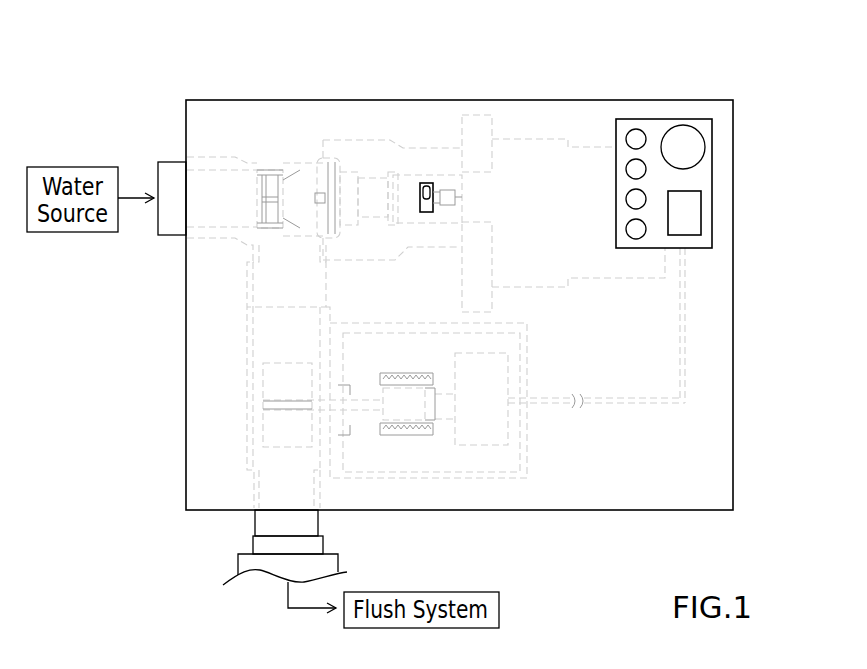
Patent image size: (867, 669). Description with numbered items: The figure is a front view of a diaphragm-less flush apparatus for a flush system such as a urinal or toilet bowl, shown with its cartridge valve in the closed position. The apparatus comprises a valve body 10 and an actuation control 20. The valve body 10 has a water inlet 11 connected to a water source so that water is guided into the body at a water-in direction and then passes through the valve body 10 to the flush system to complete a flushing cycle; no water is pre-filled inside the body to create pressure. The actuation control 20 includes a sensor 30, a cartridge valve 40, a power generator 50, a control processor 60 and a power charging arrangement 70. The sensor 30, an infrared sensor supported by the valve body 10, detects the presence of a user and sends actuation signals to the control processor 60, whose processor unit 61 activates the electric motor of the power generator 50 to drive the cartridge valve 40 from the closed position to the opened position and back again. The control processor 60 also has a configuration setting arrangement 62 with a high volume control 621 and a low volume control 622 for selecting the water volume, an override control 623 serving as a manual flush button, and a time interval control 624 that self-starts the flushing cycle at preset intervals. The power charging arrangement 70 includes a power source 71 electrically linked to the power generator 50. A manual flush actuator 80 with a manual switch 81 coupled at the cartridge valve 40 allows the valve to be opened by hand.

The valve body 10 is at (229, 165).
The water inlet 11 is at (170, 170).
The actuation control 20 is at (801, 122).
The sensor 30 is at (690, 153).
The cartridge valve 40 is at (302, 182).
The power generator 50 is at (572, 247).
The control processor 60 is at (729, 203).
The processor unit 61 is at (690, 216).
The configuration setting arrangement 62 is at (703, 203).
The high volume control 621 is at (634, 129).
The low volume control 622 is at (640, 167).
The override control 623 is at (640, 206).
The time interval control 624 is at (637, 237).
The power charging arrangement 70 is at (408, 453).
The power source 71 is at (469, 414).
The manual flush actuator 80 is at (475, 66).
The manual switch 81 is at (424, 182).